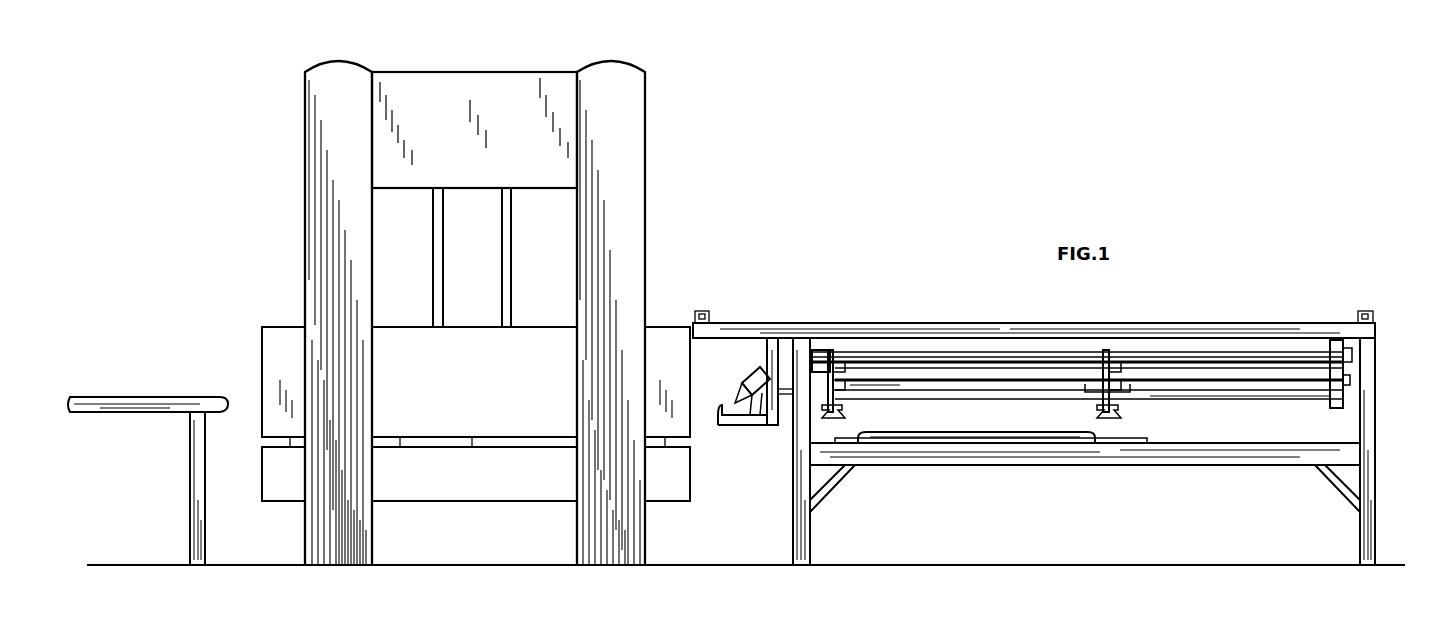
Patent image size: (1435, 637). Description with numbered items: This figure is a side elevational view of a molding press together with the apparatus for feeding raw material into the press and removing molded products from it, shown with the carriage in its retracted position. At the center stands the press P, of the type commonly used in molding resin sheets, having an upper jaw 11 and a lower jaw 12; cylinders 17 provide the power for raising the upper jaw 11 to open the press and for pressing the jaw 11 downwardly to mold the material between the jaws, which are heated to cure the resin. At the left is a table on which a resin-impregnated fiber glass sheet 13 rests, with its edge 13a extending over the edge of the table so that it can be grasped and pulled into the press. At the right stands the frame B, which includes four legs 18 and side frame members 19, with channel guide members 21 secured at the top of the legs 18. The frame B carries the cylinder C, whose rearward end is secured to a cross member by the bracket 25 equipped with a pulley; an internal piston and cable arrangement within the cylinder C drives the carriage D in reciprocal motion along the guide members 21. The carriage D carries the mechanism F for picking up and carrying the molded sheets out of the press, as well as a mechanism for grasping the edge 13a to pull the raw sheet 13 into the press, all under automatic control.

The press P is at (468, 70).
The cylinders 17 is at (305, 214).
The upper jaw 11 is at (262, 345).
The lower jaw 12 is at (288, 503).
The resin-impregnated fiber glass sheet 13 is at (106, 397).
The edge 13a is at (222, 397).
The frame B is at (1378, 342).
The channel guide members 21 is at (935, 331).
The cylinder C is at (1200, 356).
The carriage D is at (1230, 401).
The mechanism F is at (840, 406).
The side frame members 19 is at (1128, 468).
The legs 18 is at (812, 531).
The bracket 25 is at (1345, 365).